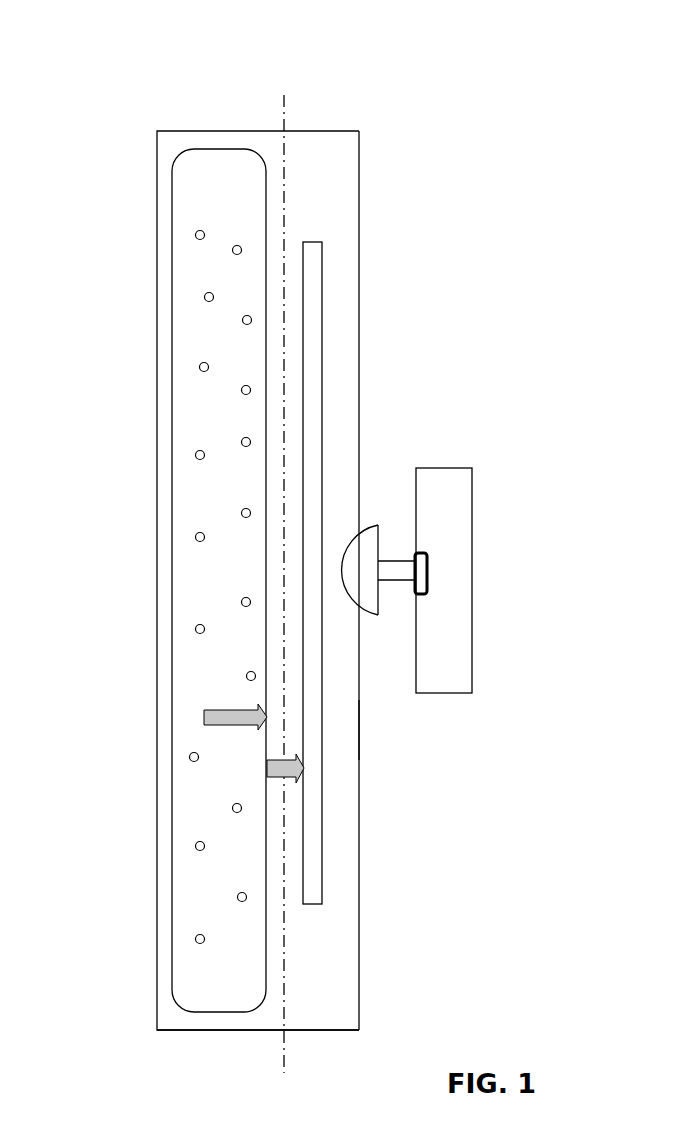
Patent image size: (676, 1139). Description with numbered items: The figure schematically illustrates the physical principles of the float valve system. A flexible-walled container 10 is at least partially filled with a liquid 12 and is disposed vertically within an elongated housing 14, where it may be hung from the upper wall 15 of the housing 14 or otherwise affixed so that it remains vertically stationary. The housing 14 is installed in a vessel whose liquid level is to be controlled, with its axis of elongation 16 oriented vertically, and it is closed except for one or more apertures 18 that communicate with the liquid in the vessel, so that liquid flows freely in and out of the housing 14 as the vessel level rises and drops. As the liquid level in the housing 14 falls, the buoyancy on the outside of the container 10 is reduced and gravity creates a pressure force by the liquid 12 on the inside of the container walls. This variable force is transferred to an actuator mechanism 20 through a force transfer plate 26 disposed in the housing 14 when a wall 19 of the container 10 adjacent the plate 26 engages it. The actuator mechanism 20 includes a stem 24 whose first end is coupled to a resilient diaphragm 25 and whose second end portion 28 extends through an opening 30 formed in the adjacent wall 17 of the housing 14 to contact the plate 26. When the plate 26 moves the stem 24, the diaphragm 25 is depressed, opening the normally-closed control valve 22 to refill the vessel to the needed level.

The flexible-walled container 10 is at (218, 149).
The liquid 12 is at (197, 350).
The housing 14 is at (359, 243).
The upper wall 15 is at (187, 131).
The housing axis of elongation 16 is at (285, 989).
The adjacent wall 17 is at (359, 727).
The apertures 18 is at (295, 1027).
The wall of container 19 is at (267, 780).
The actuator mechanism 20 is at (387, 518).
The control valve 22 is at (433, 497).
The stem 24 is at (388, 572).
The resilient diaphragm 25 is at (421, 553).
The force transfer plate 26 is at (312, 430).
The second end portion 28 is at (340, 580).
The opening 30 is at (357, 613).